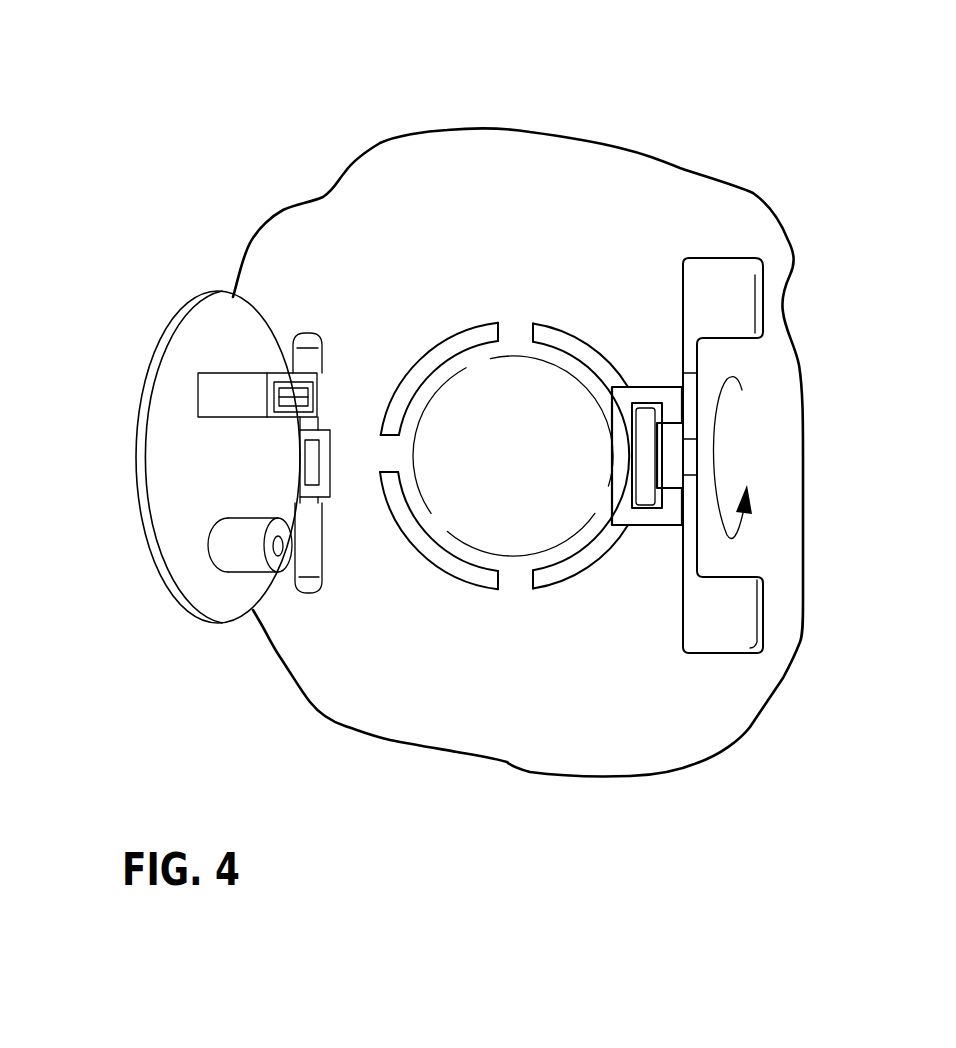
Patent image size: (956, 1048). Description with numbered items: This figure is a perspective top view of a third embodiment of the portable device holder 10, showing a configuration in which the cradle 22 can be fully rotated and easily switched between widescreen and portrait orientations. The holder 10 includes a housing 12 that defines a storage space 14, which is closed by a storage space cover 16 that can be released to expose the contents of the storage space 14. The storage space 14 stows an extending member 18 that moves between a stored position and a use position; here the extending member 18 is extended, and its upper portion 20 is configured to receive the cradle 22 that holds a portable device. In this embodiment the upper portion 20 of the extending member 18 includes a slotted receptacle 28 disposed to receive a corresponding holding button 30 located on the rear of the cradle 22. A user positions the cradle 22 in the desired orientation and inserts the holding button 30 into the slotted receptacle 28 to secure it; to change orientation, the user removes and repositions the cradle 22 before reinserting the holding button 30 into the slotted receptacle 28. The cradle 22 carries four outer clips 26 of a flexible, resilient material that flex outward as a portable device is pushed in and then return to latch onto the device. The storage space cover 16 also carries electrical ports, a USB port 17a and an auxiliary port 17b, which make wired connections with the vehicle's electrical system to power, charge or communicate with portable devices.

The portable device holder 10 is at (526, 31).
The housing 12 is at (348, 683).
The storage space 14 is at (571, 346).
The storage space cover 16 is at (172, 295).
The USB port 17a is at (220, 398).
The auxiliary port 17b is at (233, 556).
The extending member 18 is at (462, 342).
The upper portion 20 is at (466, 417).
The cradle 22 is at (697, 255).
The outer clips 26 is at (740, 282).
The slotted receptacle 28 is at (642, 516).
The holding button 30 is at (643, 487).